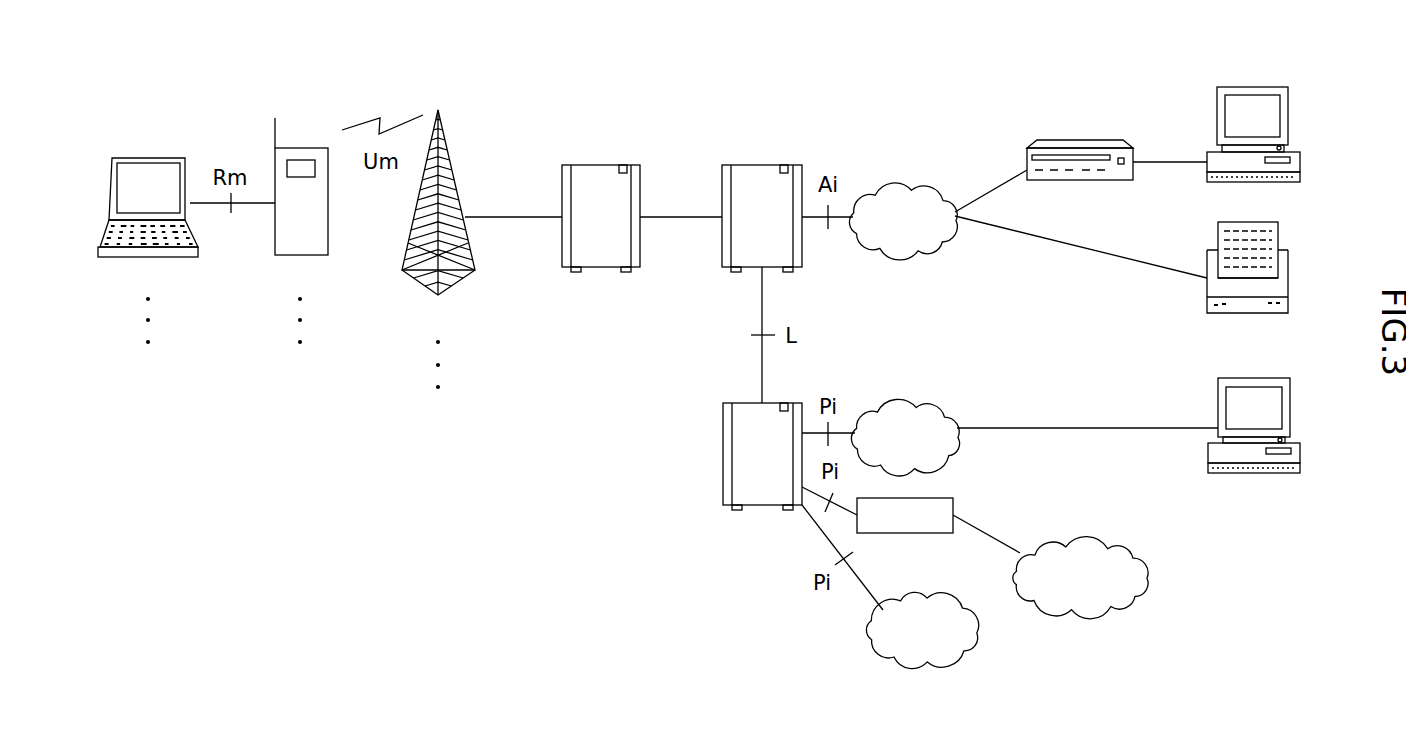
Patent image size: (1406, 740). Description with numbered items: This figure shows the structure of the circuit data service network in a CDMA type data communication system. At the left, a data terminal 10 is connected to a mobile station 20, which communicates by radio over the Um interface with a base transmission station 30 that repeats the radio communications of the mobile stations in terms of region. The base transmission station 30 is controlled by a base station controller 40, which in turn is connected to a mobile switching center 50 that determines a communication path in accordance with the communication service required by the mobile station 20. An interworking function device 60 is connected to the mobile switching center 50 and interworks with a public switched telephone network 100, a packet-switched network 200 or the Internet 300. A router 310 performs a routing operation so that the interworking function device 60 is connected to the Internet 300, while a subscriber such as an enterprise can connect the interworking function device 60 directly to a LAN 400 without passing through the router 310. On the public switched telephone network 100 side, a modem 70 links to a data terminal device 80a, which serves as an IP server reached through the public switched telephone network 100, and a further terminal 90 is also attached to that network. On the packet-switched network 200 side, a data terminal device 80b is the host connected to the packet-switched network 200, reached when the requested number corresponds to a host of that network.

The data terminal 10 is at (149, 162).
The mobile station 20 is at (300, 148).
The base transmission station 30 is at (438, 110).
The base station controller 40 is at (597, 178).
The mobile switching center 50 is at (762, 177).
The interworking function device 60 is at (767, 498).
The modem 70 is at (1076, 148).
The data terminal device 80a is at (1256, 100).
The data terminal device 80b is at (1208, 465).
The facsimile / printer 90 is at (1212, 286).
The public switched telephone network 100 is at (904, 194).
The X.25 network 200 is at (904, 409).
The Internet 300 is at (1082, 608).
The router 310 is at (946, 505).
The LAN 400 is at (934, 660).